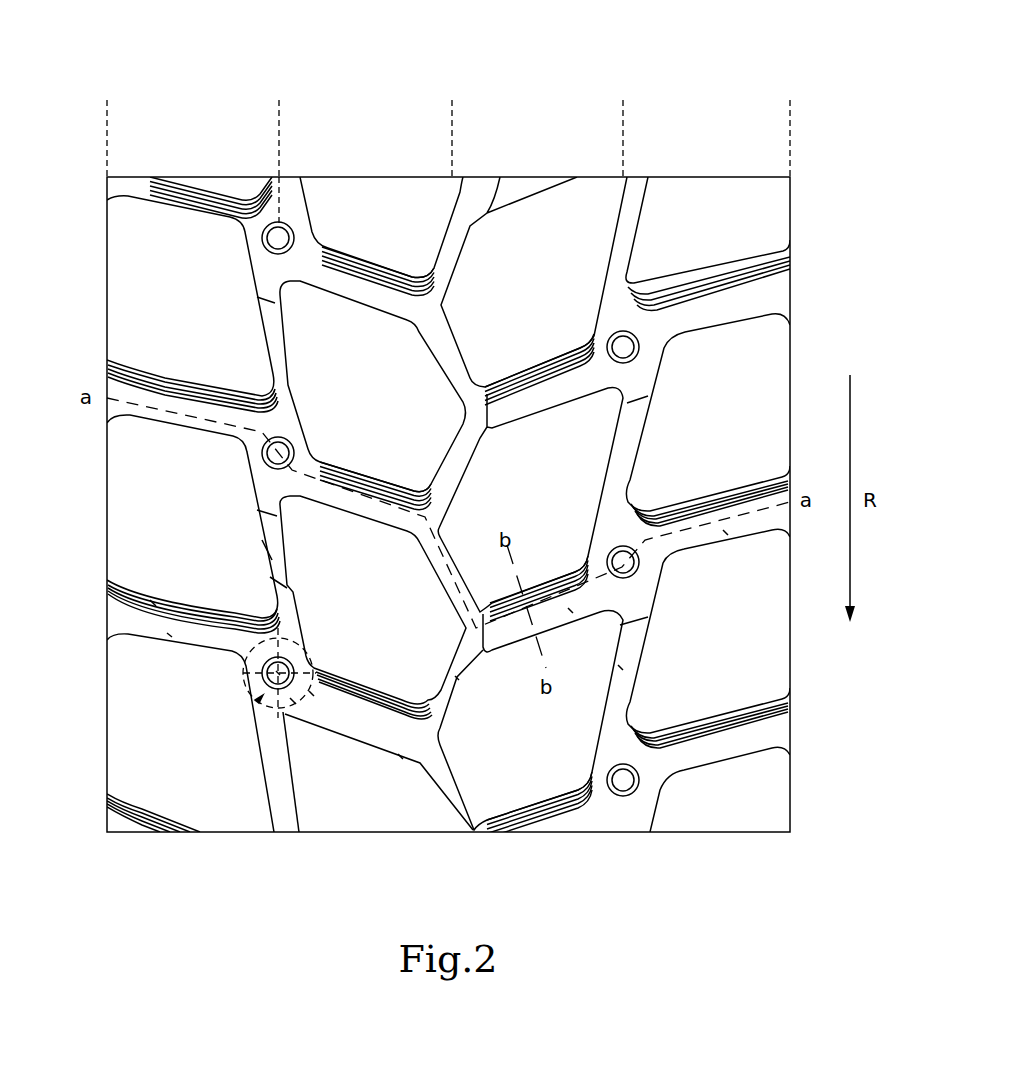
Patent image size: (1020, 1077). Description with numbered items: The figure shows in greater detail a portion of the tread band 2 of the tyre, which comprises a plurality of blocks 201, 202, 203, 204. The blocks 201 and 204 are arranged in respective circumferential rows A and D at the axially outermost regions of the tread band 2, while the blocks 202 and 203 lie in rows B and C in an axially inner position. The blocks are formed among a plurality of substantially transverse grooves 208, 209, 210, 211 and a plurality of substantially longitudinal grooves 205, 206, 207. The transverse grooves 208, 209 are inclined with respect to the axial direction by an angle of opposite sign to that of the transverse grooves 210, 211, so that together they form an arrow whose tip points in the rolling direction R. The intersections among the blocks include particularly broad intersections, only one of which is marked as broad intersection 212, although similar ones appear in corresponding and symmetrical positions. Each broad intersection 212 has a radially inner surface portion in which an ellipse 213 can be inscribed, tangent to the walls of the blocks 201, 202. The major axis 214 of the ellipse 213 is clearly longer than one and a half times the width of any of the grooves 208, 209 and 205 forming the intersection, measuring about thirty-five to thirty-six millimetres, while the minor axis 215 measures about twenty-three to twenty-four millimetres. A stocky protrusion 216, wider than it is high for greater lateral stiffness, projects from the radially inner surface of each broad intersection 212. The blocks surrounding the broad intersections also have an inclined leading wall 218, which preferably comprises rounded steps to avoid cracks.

The tread band 2 is at (664, 100).
The block 201 is at (158, 317).
The block 202 is at (352, 397).
The block 203 is at (502, 295).
The block 204 is at (700, 417).
The substantially longitudinal groove 205 is at (270, 550).
The substantially longitudinal groove 206 is at (450, 800).
The substantially longitudinal groove 207 is at (620, 667).
The substantially transverse groove 208 is at (170, 633).
The substantially transverse groove 209 is at (400, 757).
The substantially transverse groove 210 is at (570, 610).
The substantially transverse groove 211 is at (725, 532).
The broad intersection 212 is at (264, 694).
The ellipse 213 is at (278, 676).
The major axis 214 is at (292, 700).
The minor axis 215 is at (311, 693).
The protrusion 216 is at (257, 688).
The inclined leading wall 218 is at (150, 603).